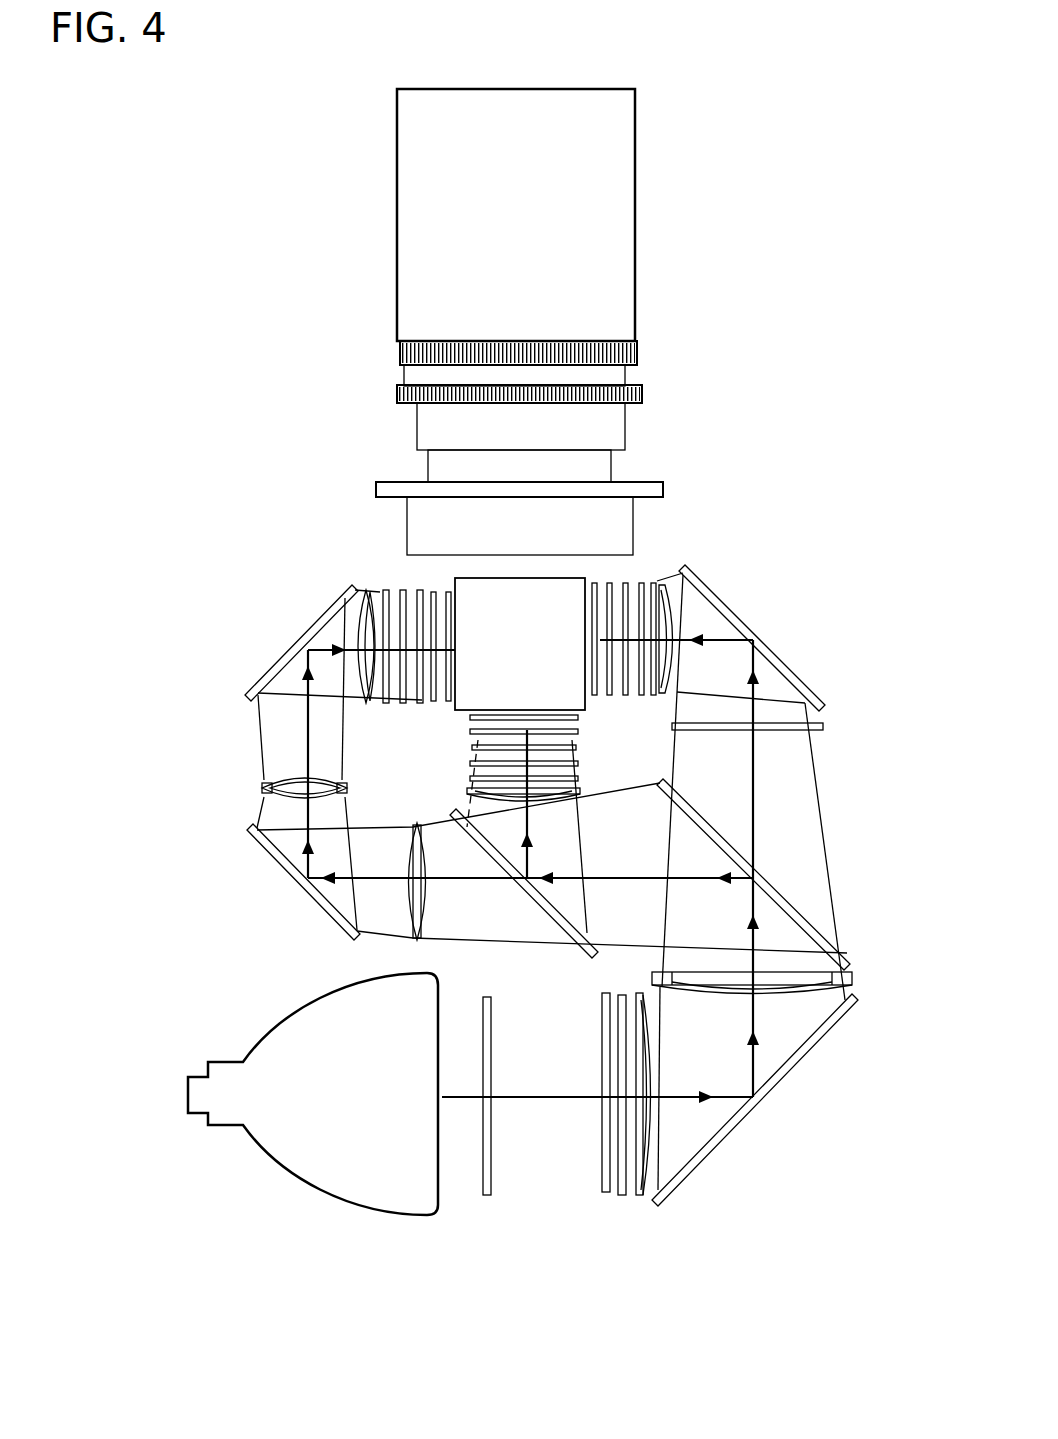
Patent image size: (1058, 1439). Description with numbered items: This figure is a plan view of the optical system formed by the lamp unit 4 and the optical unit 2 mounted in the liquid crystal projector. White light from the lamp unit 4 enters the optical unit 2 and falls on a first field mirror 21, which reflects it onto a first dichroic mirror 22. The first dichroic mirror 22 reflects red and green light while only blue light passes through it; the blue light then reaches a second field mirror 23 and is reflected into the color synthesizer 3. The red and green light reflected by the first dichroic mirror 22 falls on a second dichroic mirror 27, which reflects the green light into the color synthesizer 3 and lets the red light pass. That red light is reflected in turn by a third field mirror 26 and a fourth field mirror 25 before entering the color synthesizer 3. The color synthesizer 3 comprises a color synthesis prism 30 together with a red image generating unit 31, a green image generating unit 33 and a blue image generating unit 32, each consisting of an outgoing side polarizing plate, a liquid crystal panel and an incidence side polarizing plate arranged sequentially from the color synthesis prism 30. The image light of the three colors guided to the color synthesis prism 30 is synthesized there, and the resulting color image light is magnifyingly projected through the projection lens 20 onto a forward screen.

The optical unit 2 is at (685, 1208).
The color synthesizer 3 is at (402, 573).
The lamp unit 4 is at (347, 1203).
The projection lens 20 is at (552, 87).
The first field mirror 21 is at (765, 1093).
The first dichroic mirror 22 is at (785, 895).
The second field mirror 23 is at (773, 657).
The fourth field mirror 25 is at (302, 642).
The third field mirror 26 is at (285, 870).
The second dichroic mirror 27 is at (522, 895).
The color synthesis prism 30 is at (538, 683).
The red image generating unit 31 is at (390, 585).
The blue image generating unit 32 is at (632, 580).
The green image generating unit 33 is at (462, 742).